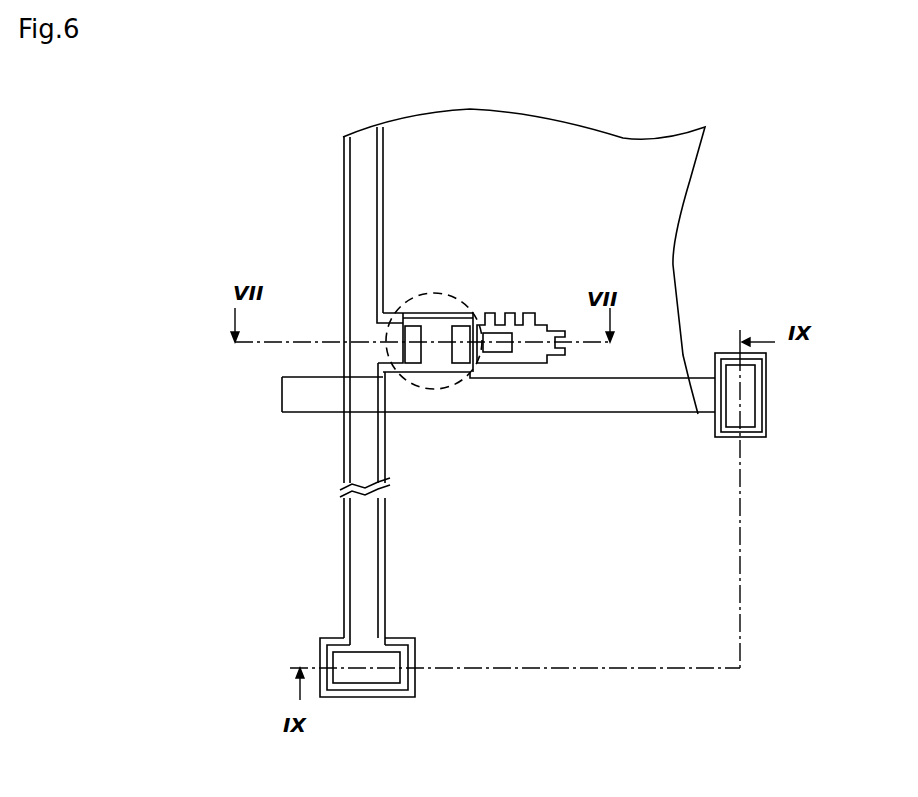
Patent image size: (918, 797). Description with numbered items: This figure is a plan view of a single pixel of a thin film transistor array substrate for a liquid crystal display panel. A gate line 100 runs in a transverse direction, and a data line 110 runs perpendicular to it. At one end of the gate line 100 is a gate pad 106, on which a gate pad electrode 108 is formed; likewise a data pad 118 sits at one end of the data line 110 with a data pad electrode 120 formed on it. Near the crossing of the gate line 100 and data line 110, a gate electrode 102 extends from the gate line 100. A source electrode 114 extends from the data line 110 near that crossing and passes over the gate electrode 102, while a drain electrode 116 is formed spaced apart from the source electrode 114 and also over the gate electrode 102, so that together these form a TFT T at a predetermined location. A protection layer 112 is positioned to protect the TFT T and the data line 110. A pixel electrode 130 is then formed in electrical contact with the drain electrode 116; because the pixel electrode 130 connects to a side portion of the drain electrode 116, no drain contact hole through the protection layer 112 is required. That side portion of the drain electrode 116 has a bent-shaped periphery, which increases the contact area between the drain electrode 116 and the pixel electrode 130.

The gate line 100 is at (600, 407).
The gate electrode 102 is at (437, 355).
The gate pad 106 is at (766, 372).
The gate pad electrode 108 is at (747, 405).
The data line 110 is at (357, 182).
The protection layer 112 is at (345, 228).
The source electrode 114 is at (412, 352).
The drain electrode 116 is at (457, 357).
The data pad 118 is at (385, 697).
The data pad electrode 120 is at (350, 672).
The pixel electrode 130 is at (550, 138).
The TFT T is at (405, 305).